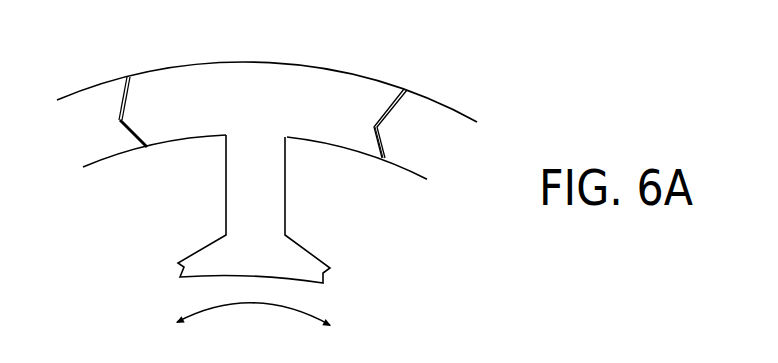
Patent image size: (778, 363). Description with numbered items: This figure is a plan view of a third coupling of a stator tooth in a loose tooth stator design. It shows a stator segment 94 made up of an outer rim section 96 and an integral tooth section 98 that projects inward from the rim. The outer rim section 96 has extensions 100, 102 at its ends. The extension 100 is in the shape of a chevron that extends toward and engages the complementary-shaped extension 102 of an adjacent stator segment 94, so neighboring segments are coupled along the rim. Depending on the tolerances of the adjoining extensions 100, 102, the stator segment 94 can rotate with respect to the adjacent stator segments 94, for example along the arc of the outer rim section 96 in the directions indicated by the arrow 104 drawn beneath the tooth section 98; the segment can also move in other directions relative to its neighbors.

The stator segment 94 is at (84, 80).
The outer rim section 96 is at (285, 82).
The integral tooth section 98 is at (273, 183).
The extension 100 is at (142, 83).
The extension 102 is at (99, 97).
The arrow 104 is at (307, 323).